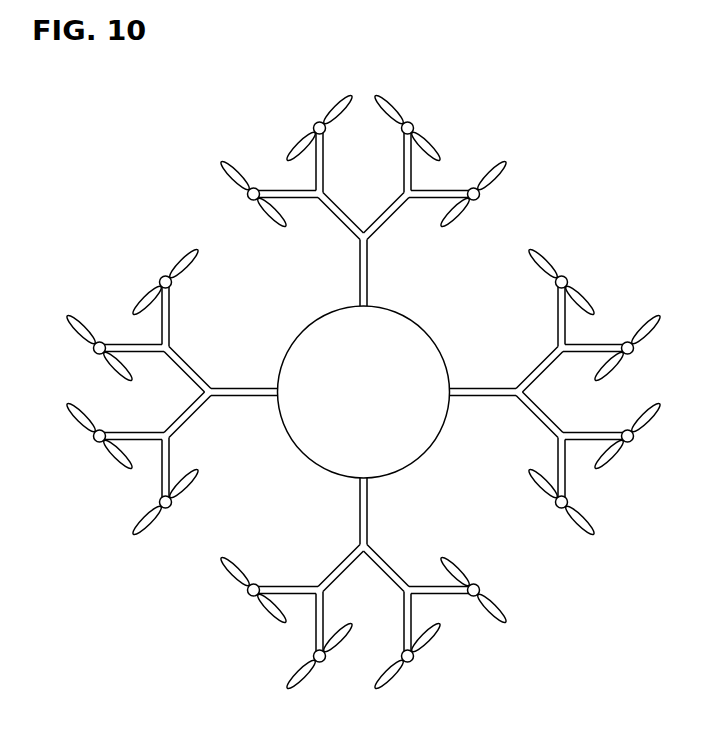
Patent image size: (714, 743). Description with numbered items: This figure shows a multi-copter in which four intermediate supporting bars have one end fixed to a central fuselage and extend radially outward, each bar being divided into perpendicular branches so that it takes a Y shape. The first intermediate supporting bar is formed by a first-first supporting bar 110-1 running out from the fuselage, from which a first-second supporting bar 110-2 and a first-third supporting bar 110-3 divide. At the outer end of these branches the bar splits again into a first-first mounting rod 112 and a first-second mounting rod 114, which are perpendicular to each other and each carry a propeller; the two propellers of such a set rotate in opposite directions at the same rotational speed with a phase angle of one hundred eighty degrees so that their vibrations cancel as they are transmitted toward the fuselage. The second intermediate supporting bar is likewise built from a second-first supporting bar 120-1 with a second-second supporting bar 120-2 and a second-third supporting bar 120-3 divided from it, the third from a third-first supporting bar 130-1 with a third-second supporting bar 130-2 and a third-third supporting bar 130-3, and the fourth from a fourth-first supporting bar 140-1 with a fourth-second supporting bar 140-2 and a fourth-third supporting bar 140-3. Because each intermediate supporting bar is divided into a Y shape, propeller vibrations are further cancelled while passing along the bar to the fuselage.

The first-first supporting bar 110-1 is at (475, 388).
The first-second supporting bar 110-2 is at (545, 366).
The first-third supporting bar 110-3 is at (535, 414).
The first-first mounting rod 112 is at (557, 302).
The first-second mounting rod 114 is at (601, 345).
The second-first supporting bar 120-1 is at (359, 278).
The second-second supporting bar 120-2 is at (336, 216).
The second-third supporting bar 120-3 is at (392, 215).
The third-first supporting bar 130-1 is at (252, 396).
The third-second supporting bar 130-2 is at (217, 350).
The third-third supporting bar 130-3 is at (181, 425).
The fourth-first supporting bar 140-1 is at (359, 500).
The fourth-second supporting bar 140-2 is at (334, 573).
The fourth-third supporting bar 140-3 is at (410, 544).